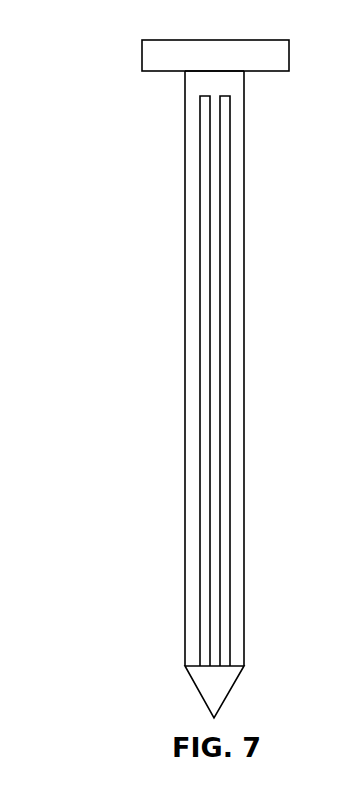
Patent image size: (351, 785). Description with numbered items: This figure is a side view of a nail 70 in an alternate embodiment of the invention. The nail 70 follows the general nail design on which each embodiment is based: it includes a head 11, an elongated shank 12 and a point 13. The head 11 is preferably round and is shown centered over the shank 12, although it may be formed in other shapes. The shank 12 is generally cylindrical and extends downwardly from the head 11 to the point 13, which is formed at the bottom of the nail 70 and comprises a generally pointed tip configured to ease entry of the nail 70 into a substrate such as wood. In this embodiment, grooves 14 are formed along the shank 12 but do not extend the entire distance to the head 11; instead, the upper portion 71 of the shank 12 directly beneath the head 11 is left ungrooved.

The nail 70 is at (101, 49).
The head 11 is at (262, 40).
The upper portion 71 is at (232, 78).
The shank 12 is at (185, 374).
The grooves 14 is at (205, 333).
The point 13 is at (233, 688).